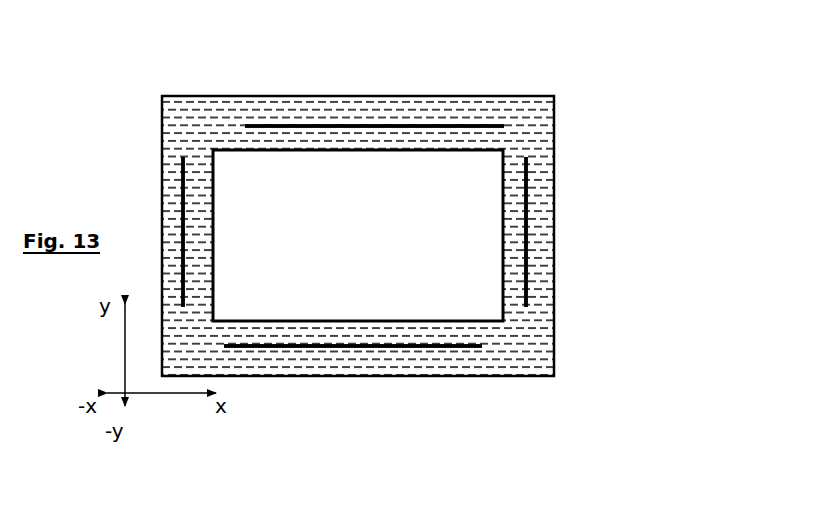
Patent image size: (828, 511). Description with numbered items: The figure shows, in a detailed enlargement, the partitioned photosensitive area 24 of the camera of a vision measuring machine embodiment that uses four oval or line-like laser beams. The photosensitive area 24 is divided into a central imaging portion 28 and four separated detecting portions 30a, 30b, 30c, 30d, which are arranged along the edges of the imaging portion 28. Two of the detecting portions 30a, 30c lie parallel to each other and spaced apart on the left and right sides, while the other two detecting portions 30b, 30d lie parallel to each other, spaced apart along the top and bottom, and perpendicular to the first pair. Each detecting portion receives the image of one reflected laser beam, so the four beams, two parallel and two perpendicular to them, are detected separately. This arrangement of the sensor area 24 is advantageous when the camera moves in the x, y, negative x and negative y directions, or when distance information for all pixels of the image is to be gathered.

The photosensitive area 24 is at (190, 88).
The imaging portion 28 is at (371, 244).
The detecting portion 30a is at (540, 270).
The detecting portion 30b is at (326, 124).
The detecting portion 30c is at (168, 226).
The detecting portion 30d is at (465, 363).